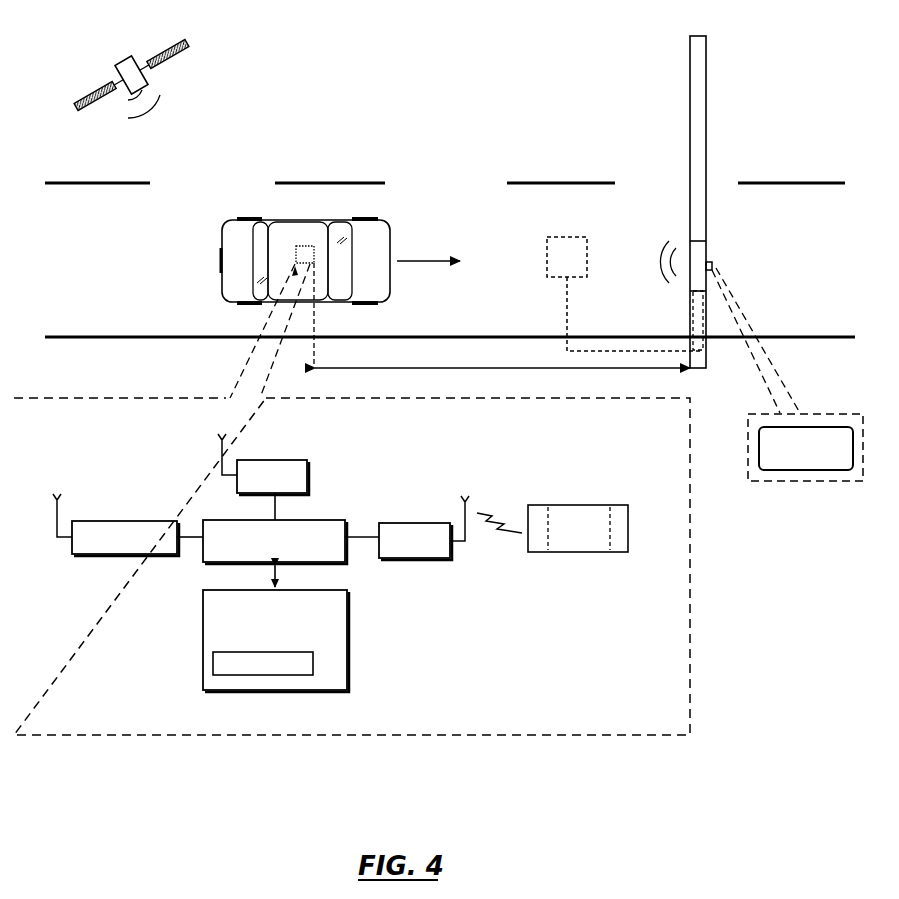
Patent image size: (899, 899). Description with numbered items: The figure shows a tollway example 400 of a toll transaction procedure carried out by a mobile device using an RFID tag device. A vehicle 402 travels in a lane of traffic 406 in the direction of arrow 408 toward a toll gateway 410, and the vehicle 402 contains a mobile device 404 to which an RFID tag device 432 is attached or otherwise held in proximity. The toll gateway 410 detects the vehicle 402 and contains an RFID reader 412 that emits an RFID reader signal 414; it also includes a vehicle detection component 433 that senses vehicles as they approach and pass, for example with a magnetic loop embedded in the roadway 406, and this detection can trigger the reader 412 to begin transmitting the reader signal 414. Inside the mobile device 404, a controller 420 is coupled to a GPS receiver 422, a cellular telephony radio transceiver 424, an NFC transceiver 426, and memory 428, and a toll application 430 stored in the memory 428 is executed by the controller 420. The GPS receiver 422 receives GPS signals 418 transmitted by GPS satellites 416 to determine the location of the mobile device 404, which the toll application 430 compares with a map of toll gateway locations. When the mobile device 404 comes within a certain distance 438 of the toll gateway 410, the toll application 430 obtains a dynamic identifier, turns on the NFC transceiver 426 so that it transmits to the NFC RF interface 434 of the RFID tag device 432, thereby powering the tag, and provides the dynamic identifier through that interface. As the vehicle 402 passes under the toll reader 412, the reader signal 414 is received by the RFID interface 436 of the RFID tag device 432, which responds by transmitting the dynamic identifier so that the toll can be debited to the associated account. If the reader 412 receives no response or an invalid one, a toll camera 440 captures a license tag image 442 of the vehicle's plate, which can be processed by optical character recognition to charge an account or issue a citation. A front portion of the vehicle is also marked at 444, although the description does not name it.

The tollway example 400 is at (507, 29).
The vehicle 402 is at (222, 227).
The mobile device 404 is at (306, 246).
The lane of traffic 406 is at (103, 251).
The arrow 408 is at (420, 262).
The toll gateway 410 is at (706, 132).
The RFID reader 412 is at (706, 243).
The RFID reader signal 414 is at (667, 281).
The GPS satellites 416 is at (118, 74).
The GPS signals 418 is at (166, 96).
The controller 420 is at (220, 520).
The global positioning system (GPS) receiver 422 is at (307, 485).
The cellular telephony radio transceiver 424 is at (113, 521).
The NFC transceiver 426 is at (418, 523).
The memory 428 is at (348, 634).
The toll application 430 is at (252, 676).
The RFID tag device 432 is at (587, 501).
The vehicle detection component 433 is at (560, 237).
The NFC RF interface 434 is at (540, 553).
The RFID interface 436 is at (622, 553).
The distance 438 is at (430, 366).
The toll camera 440 is at (714, 262).
The license tag image 442 is at (805, 471).
The vehicle front 444 is at (221, 267).